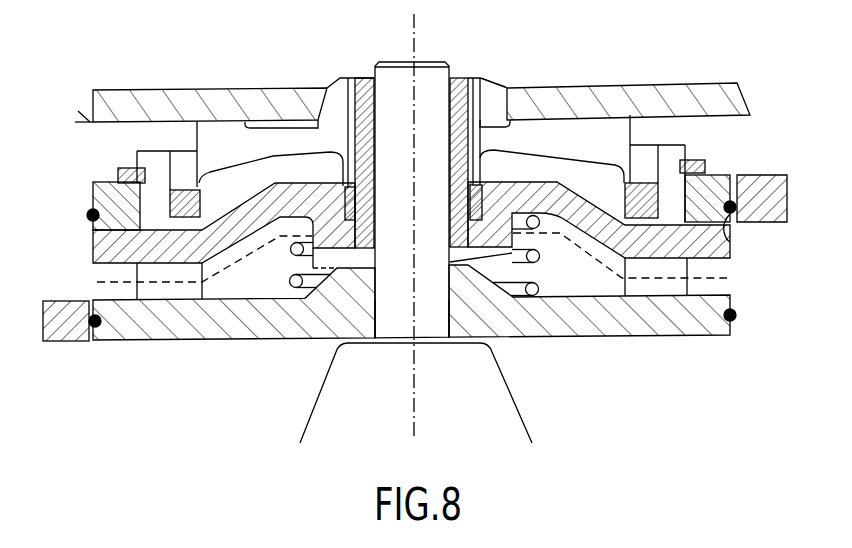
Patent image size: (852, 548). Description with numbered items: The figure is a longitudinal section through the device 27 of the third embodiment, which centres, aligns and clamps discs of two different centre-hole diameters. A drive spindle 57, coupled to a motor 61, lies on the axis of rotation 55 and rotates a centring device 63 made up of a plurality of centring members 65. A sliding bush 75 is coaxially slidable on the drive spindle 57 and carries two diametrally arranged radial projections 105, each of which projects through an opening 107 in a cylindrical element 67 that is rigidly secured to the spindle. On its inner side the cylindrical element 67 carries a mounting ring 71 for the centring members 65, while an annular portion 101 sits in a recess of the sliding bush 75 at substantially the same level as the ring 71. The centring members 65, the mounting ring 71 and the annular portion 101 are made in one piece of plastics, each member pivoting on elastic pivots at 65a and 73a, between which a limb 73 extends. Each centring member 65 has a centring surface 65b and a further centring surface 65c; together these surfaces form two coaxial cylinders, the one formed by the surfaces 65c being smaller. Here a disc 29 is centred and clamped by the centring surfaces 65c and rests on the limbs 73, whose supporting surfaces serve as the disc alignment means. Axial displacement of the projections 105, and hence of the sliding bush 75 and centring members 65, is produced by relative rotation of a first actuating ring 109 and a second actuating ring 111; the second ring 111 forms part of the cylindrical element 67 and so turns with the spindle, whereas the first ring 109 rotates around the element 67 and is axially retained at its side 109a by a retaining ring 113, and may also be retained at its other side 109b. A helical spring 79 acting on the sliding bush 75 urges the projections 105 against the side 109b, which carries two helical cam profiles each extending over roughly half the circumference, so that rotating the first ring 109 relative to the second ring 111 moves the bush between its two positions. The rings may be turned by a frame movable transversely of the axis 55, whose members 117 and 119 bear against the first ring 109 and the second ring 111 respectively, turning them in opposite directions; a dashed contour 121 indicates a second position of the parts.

The device 27 is at (118, 363).
The disc 29 is at (183, 105).
The axis of rotation 55 is at (427, 34).
The drive spindle 57 is at (440, 313).
The motor 61 is at (493, 398).
The centring device 63 is at (530, 75).
The centring member 65 is at (485, 96).
The elastic pivot location 65a is at (625, 175).
The centring surface 65b is at (197, 138).
The further centring surface 65c is at (318, 102).
The cylindrical element 67 is at (668, 158).
The mounting ring 71 is at (645, 183).
The limb 73 is at (574, 137).
The elastic pivot location 73a is at (485, 160).
The sliding bush 75 is at (457, 84).
The helical spring 79 is at (540, 264).
The annular portion 101 is at (494, 192).
The radial projection 105 is at (135, 247).
The opening 107 is at (609, 112).
The first actuating ring 109 is at (718, 182).
The side of first ring 109a is at (105, 183).
The other side of first ring 109b is at (95, 236).
The second actuating ring 111 is at (698, 313).
The retaining ring 113 is at (696, 172).
The frame member 117 is at (733, 239).
The frame member 119 is at (66, 323).
The deflected position (phantom) 121 is at (95, 282).